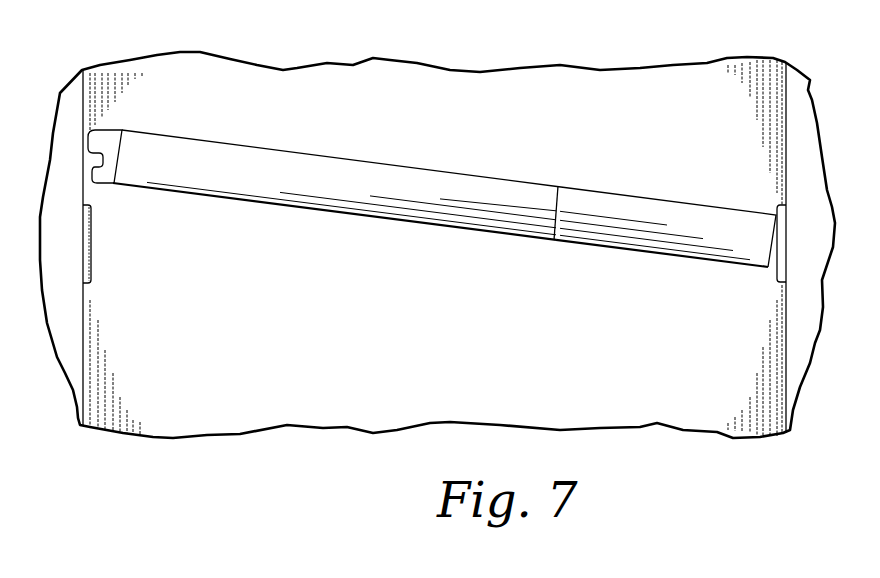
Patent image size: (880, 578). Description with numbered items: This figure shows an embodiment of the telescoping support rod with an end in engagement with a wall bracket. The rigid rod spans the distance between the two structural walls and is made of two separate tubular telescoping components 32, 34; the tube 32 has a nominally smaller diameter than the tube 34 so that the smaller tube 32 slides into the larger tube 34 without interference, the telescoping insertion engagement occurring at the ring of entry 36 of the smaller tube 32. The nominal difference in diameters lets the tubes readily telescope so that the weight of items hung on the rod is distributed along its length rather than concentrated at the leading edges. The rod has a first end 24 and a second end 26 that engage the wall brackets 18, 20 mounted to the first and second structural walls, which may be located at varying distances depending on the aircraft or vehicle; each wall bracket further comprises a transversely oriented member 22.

The wall bracket 18 is at (85, 272).
The wall bracket 20 is at (787, 222).
The transversely oriented member 22 is at (83, 242).
The first end 24 is at (104, 183).
The second end 26 is at (774, 215).
The tubular telescoping component 32 is at (655, 251).
The tubular telescoping component 34 is at (415, 221).
The ring of entry 36 is at (558, 187).